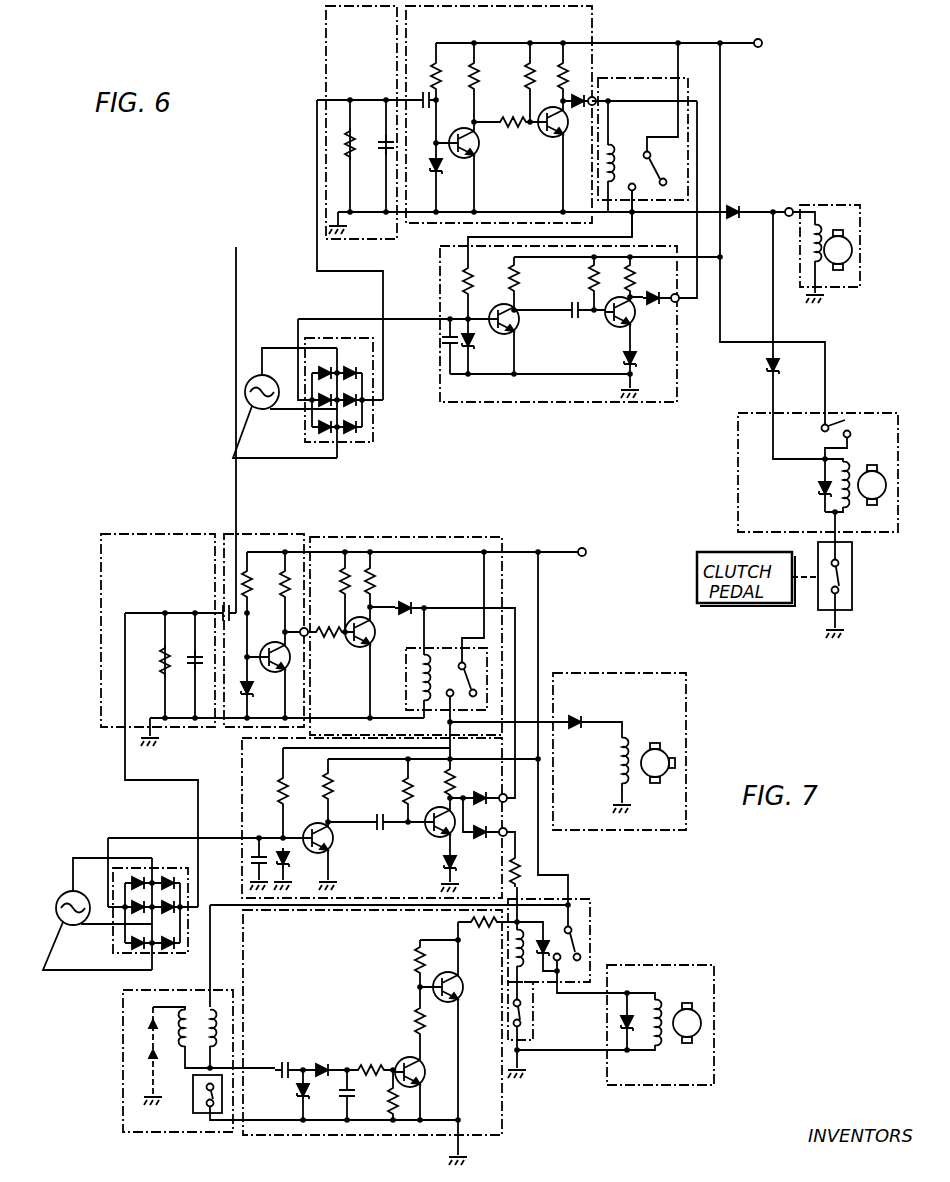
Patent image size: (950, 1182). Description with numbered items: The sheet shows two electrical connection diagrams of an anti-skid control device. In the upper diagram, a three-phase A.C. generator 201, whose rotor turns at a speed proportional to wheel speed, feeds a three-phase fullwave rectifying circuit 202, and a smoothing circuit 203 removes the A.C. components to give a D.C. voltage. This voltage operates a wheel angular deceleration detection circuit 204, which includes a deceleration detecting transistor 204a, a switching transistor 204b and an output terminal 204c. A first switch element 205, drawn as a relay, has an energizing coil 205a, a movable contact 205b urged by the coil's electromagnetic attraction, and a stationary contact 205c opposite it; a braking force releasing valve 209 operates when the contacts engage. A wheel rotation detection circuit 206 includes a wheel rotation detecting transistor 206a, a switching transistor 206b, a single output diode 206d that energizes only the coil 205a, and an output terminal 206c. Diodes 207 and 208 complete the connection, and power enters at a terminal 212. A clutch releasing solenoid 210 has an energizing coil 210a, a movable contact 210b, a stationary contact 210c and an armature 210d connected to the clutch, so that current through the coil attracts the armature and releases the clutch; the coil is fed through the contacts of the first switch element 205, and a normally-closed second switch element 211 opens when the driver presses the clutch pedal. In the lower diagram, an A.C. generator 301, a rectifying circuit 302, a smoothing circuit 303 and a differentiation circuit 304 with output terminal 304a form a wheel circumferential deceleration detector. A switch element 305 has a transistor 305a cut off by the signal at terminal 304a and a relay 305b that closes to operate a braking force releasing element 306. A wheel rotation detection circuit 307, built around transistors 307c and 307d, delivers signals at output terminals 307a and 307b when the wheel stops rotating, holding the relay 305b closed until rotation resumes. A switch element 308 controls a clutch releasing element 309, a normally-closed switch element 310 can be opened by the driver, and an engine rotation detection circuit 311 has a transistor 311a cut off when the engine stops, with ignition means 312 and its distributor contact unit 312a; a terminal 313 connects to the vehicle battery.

In FIG. 6, the three-phase A.C. generator 201 is at (248, 382).
In FIG. 6, the three-phase fullwave rectifying circuit 202 is at (377, 412).
In FIG. 6, the smoothing circuit 203 is at (326, 50).
In FIG. 6, the wheel angular deceleration detection circuit 204 is at (530, 114).
In FIG. 6, the deceleration detecting transistor 204a is at (478, 150).
In FIG. 6, the switching transistor 204b is at (527, 129).
In FIG. 6, the output terminal 204c is at (594, 98).
In FIG. 6, the first switch element 205 is at (636, 140).
In FIG. 6, the energizing coil 205a is at (604, 165).
In FIG. 6, the movable contact 205b is at (656, 172).
In FIG. 6, the stationary contact 205c is at (632, 182).
In FIG. 6, the wheel rotation detection circuit 206 is at (587, 328).
In FIG. 6, the wheel rotation detecting transistor 206a is at (512, 334).
In FIG. 6, the switching transistor 206b is at (612, 326).
In FIG. 6, the output terminal 206c is at (677, 304).
In FIG. 6, the output diode 206d is at (650, 290).
In FIG. 6, the diode 207 is at (749, 194).
In FIG. 6, the diode 208 is at (765, 371).
In FIG. 6, the braking force releasing valve 209 is at (822, 203).
In FIG. 6, the clutch releasing solenoid 210 is at (800, 467).
In FIG. 6, the energizing coil 210a is at (818, 494).
In FIG. 6, the movable contact 210b is at (836, 424).
In FIG. 6, the stationary contact 210c is at (850, 430).
In FIG. 6, the armature 210d is at (872, 506).
In FIG. 6, the normally-closed second switch element 211 is at (852, 586).
In FIG. 6, the power supply terminal 212 is at (762, 42).
In FIG. 7, the A.C. generator 301 is at (64, 893).
In FIG. 7, the rectifying circuit 302 is at (172, 868).
In FIG. 7, the smoothing circuit 303 is at (182, 533).
In FIG. 7, the differentiation circuit 304 is at (294, 618).
In FIG. 7, the output terminal 304a is at (305, 637).
In FIG. 7, the switch element 305 is at (405, 622).
In FIG. 7, the transistor 305a is at (358, 644).
In FIG. 7, the relay 305b is at (434, 646).
In FIG. 7, the braking force releasing element 306 is at (608, 672).
In FIG. 7, the wheel rotation detection circuit 307 is at (388, 818).
In FIG. 7, the output terminal 307a is at (508, 800).
In FIG. 7, the output terminal 307b is at (508, 833).
In FIG. 7, the transistor 307c is at (333, 853).
In FIG. 7, the transistor 307d is at (430, 829).
In FIG. 7, the switch element 308 is at (592, 928).
In FIG. 7, the clutch releasing element 309 is at (675, 963).
In FIG. 7, the normally-closed switch element 310 is at (535, 1000).
In FIG. 7, the engine rotation detection circuit 311 is at (372, 1037).
In FIG. 7, the transistor 311a is at (436, 980).
In FIG. 7, the ignition means 312 is at (149, 1077).
In FIG. 7, the distributor contact unit 312a is at (202, 1116).
In FIG. 7, the terminal 313 is at (582, 556).